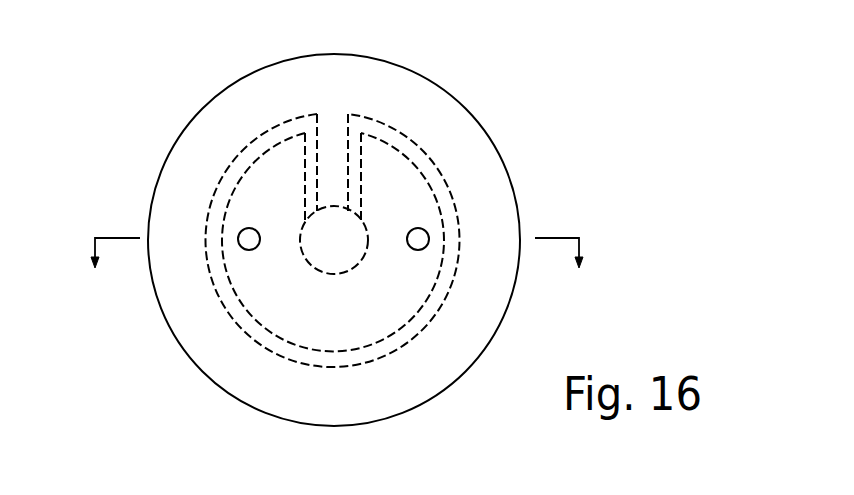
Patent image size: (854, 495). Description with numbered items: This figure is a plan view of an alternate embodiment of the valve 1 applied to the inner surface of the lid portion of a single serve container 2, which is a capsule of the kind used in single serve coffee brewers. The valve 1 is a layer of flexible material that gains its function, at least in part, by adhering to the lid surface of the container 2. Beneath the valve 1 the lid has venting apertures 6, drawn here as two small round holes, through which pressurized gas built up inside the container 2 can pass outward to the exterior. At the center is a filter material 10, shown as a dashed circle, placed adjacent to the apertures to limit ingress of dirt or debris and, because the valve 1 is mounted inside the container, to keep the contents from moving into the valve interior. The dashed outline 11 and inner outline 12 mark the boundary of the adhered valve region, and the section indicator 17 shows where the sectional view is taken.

The valve 1 is at (339, 242).
The container 2 is at (442, 88).
The venting aperture 6 is at (249, 228).
The filter material 10 is at (332, 273).
The outer groove wall / slot 11 is at (357, 127).
The inner groove wall 12 is at (287, 310).
The section line XVII-XVII 17 is at (335, 281).